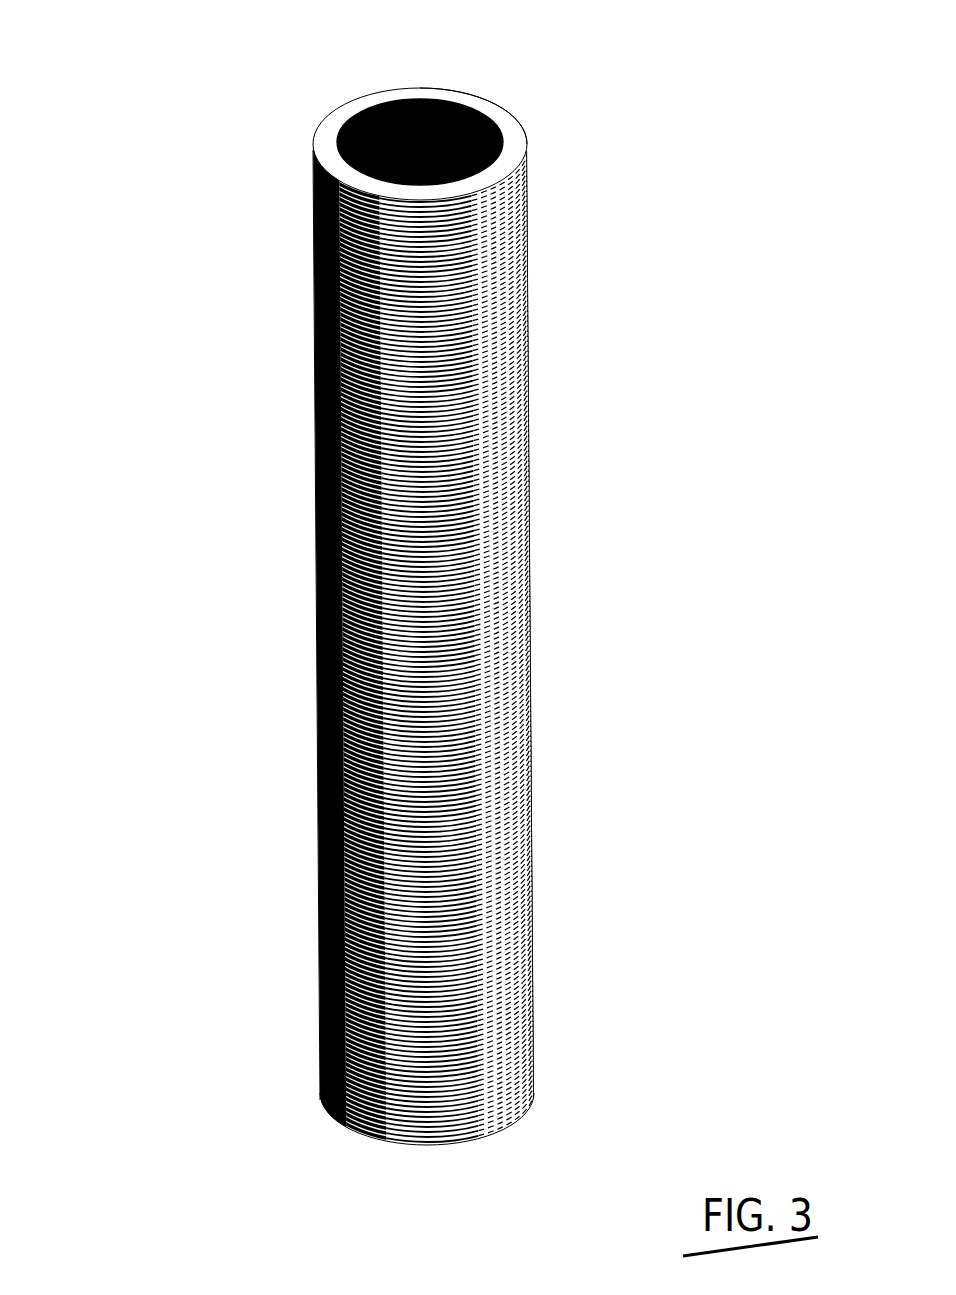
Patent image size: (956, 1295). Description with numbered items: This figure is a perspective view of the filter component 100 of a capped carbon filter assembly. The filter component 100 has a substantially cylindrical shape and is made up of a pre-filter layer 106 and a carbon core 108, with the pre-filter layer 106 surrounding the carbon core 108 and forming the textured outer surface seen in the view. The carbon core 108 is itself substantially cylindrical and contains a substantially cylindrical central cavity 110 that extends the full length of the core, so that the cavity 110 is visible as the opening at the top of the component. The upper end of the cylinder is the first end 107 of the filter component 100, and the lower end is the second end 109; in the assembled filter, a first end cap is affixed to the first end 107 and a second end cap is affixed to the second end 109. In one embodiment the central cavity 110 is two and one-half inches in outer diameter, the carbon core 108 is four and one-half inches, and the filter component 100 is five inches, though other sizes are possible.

The filter component 100 is at (535, 795).
The pre-filter layer 106 is at (517, 153).
The first end 107 is at (313, 153).
The carbon core 108 is at (473, 107).
The second end 109 is at (337, 1118).
The central cavity 110 is at (430, 97).